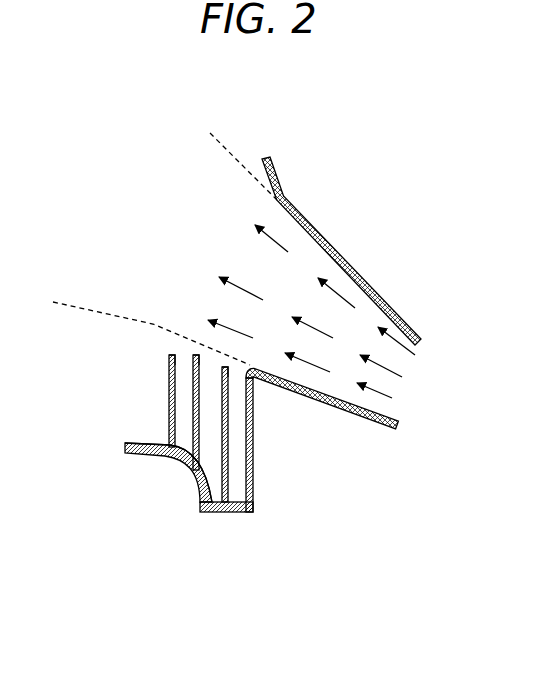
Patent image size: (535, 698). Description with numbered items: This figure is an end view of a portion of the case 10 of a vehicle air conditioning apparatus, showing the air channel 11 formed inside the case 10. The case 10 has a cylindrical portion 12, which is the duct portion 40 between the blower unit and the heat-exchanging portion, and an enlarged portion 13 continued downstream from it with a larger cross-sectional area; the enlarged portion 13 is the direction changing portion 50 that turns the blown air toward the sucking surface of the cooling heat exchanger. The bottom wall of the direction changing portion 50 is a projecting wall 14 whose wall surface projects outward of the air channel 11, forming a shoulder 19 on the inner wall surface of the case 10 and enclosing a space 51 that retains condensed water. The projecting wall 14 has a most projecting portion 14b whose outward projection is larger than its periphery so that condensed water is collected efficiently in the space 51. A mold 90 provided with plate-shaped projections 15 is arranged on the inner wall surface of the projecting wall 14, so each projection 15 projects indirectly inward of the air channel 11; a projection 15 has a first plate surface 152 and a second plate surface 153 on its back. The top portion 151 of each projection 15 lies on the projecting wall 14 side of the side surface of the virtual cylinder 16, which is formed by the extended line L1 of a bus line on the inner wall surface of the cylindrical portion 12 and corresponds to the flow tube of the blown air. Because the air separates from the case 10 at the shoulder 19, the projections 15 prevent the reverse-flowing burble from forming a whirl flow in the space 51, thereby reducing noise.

The case 10 is at (363, 420).
The air channel 11 is at (182, 207).
The cylindrical portion 12 is at (385, 251).
The duct portion 40 is at (387, 305).
The enlarged portion 13 is at (125, 497).
The direction changing portion 50 is at (127, 455).
The projecting wall 14 is at (296, 527).
The most projecting portion 14b is at (230, 512).
The projection 15 is at (170, 417).
The top portion 151 is at (226, 367).
The first plate surface 152 is at (230, 440).
The second plate surface 153 is at (213, 480).
The virtual cylinder 16 is at (107, 303).
The shoulder 19 is at (252, 468).
The space 51 is at (245, 482).
The mold 90 is at (135, 440).
The extended line L1 is at (226, 147).